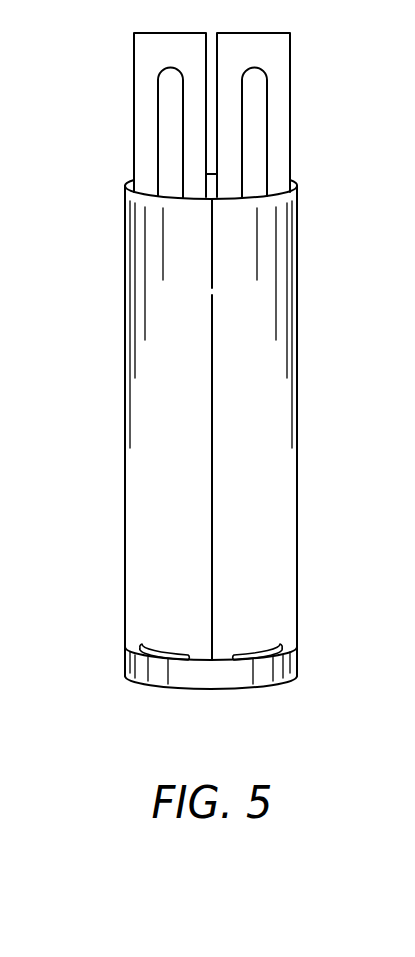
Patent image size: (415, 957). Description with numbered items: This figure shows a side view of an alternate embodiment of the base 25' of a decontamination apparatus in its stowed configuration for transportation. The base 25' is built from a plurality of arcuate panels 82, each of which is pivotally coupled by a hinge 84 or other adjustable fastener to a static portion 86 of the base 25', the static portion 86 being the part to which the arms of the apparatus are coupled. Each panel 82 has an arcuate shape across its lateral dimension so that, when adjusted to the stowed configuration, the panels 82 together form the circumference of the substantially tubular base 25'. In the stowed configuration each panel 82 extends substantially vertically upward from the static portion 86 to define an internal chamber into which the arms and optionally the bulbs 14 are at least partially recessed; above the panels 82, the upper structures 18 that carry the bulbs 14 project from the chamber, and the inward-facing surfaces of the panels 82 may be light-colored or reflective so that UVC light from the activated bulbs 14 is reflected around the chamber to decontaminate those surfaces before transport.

The plate 18 is at (152, 49).
The bulbs 14 is at (165, 108).
The arcuate panels 82 is at (125, 540).
The base 25' is at (185, 428).
The hinge 84 is at (128, 648).
The static portion 86 is at (183, 677).